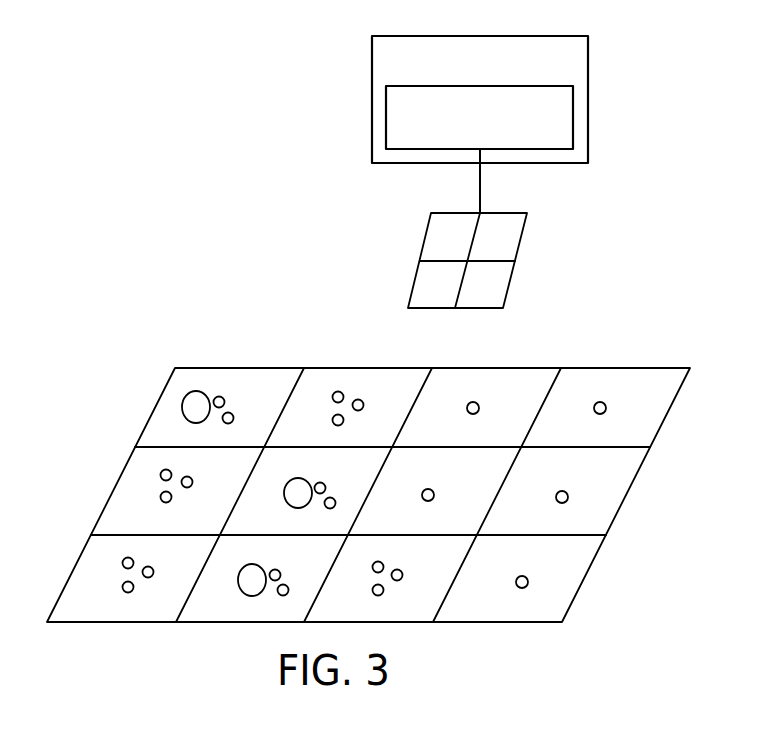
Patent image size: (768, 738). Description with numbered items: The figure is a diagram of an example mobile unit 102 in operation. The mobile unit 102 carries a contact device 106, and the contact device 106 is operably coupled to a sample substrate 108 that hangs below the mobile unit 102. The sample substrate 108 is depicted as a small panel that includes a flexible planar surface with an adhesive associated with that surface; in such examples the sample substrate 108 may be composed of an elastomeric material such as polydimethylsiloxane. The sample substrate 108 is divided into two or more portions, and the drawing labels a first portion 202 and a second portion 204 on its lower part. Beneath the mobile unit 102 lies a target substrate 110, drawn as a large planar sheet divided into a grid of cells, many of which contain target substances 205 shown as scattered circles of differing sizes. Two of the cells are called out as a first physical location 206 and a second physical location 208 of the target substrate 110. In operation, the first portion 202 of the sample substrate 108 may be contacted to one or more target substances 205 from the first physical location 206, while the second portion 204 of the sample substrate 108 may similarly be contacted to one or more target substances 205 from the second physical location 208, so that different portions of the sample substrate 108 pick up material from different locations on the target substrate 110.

The mobile unit 102 is at (588, 71).
The contact device 106 is at (573, 134).
The sample substrate 108 is at (412, 232).
The target substrate 110 is at (675, 428).
The first portion 202 is at (443, 290).
The second portion 204 is at (482, 290).
The target substances 205 is at (222, 397).
The first physical location 206 is at (395, 383).
The second physical location 208 is at (500, 385).